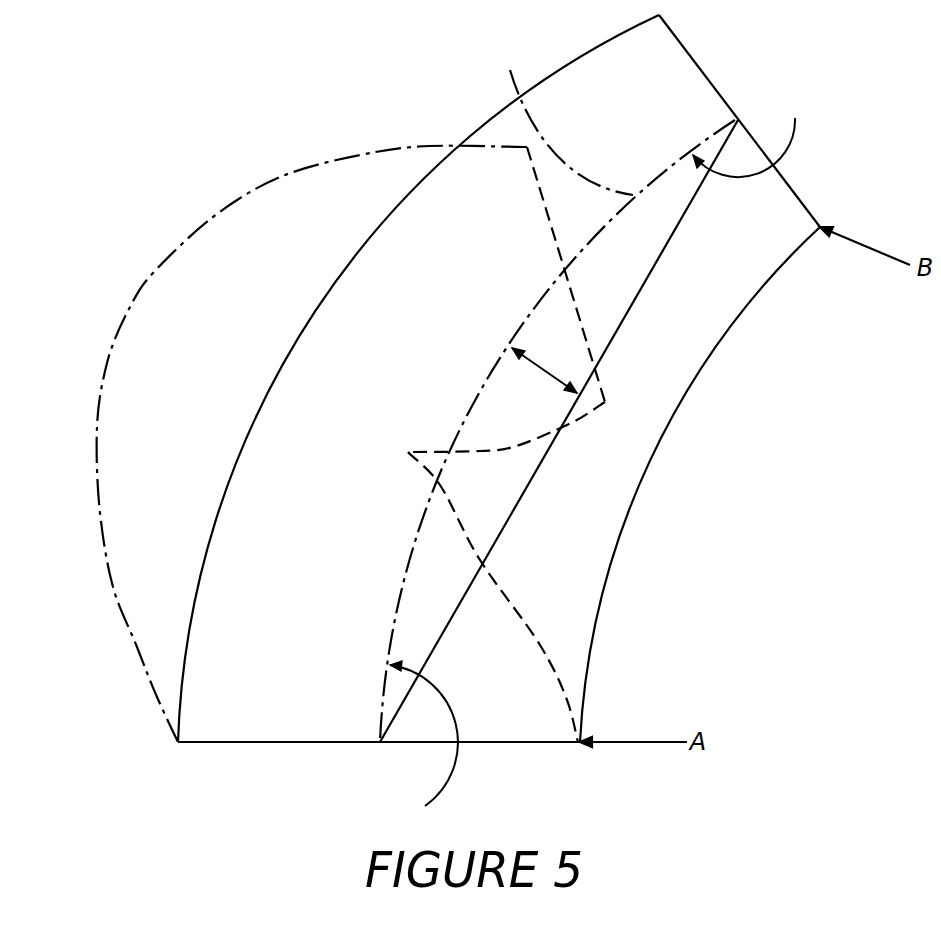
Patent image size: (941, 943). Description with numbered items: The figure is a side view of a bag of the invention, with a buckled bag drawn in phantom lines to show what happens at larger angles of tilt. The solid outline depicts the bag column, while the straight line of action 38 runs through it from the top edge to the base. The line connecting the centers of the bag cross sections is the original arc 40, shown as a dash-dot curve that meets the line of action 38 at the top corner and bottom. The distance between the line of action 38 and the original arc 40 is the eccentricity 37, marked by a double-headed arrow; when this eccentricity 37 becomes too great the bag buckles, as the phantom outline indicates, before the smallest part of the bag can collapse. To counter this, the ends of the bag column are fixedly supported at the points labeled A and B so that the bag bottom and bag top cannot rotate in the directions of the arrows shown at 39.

The eccentricity 37 is at (540, 367).
The line of action 38 is at (538, 467).
The arrows showing direction of rotation 39 is at (783, 145).
The original arc 40 is at (510, 70).